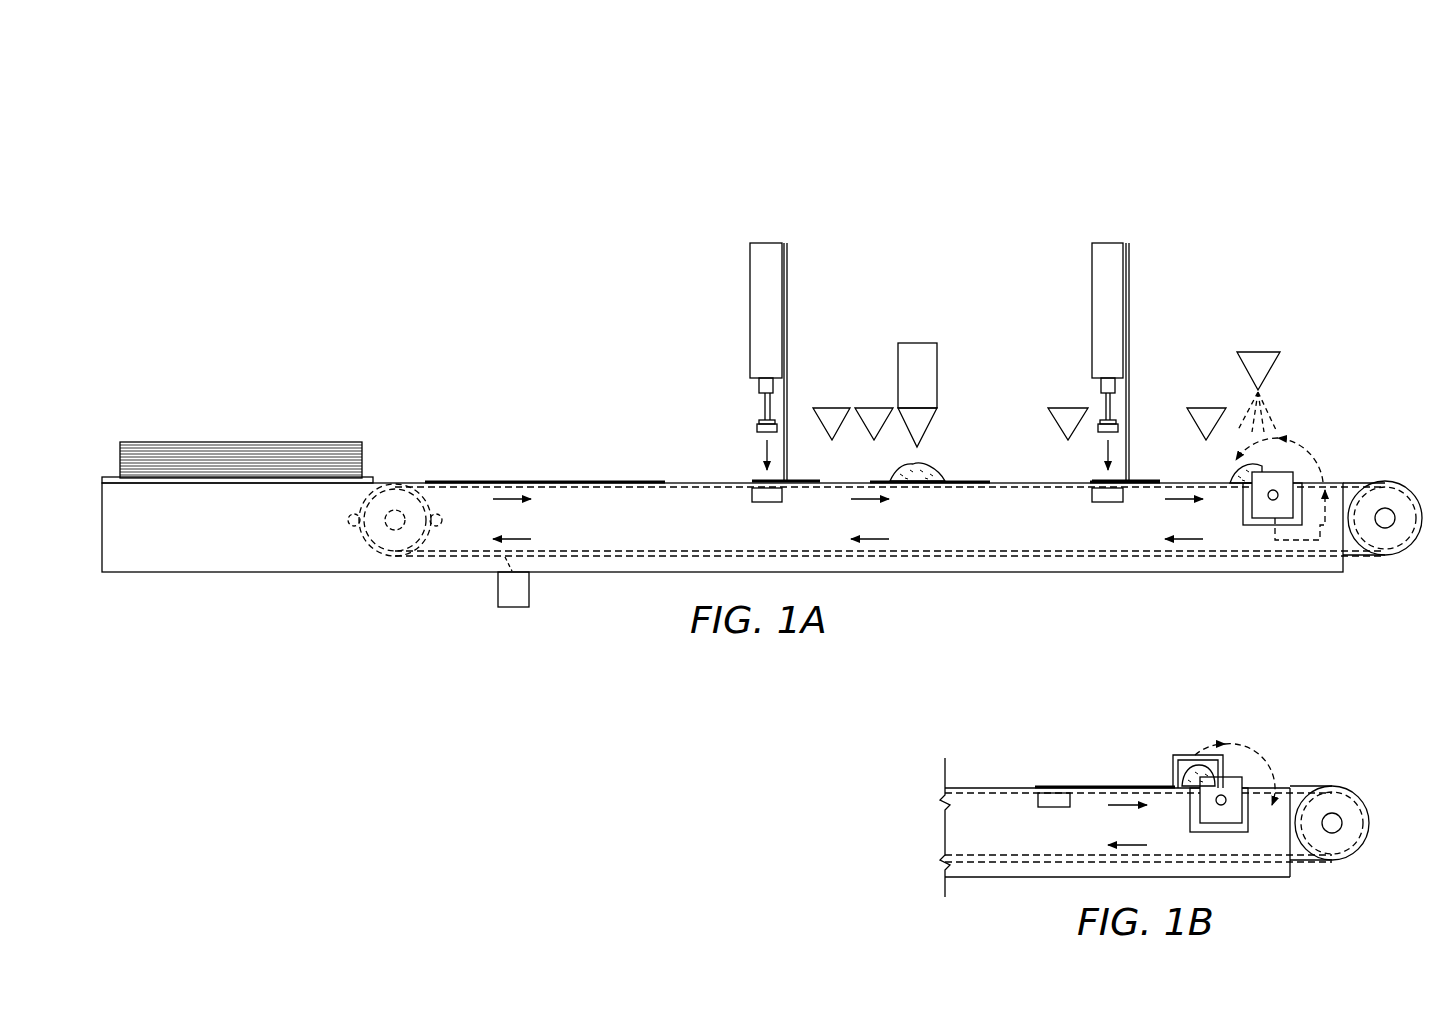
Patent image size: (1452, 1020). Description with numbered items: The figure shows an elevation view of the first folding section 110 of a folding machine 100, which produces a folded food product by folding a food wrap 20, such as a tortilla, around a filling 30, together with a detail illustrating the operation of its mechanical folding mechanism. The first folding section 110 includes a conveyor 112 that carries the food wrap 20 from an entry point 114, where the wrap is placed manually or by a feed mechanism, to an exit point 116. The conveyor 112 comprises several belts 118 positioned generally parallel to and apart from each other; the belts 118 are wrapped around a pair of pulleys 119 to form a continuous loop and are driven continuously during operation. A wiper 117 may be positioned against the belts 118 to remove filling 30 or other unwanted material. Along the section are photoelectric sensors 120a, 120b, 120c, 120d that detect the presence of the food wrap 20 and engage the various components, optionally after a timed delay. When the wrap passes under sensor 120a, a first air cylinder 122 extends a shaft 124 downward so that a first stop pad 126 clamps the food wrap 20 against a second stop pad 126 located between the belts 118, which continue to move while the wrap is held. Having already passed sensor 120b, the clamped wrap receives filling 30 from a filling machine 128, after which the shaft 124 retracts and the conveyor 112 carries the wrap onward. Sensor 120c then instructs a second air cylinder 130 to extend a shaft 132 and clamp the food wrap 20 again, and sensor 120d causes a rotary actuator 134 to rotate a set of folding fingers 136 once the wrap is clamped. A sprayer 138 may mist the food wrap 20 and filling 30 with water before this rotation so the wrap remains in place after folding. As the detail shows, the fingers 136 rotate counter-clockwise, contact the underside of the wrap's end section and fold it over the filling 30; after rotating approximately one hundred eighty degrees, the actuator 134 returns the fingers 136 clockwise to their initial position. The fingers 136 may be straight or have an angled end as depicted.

In FIG. 1A, the folding machine 100 is at (326, 151).
In FIG. 1A, the first folding section 110 is at (616, 220).
In FIG. 1B, the first folding section 110 is at (1127, 825).
In FIG. 1A, the conveyor 112 is at (968, 575).
In FIG. 1B, the conveyor 112 is at (1136, 827).
In FIG. 1A, the entry point 114 is at (404, 443).
In FIG. 1A, the exit point 116 is at (1410, 420).
In FIG. 1A, the wiper 117 is at (498, 590).
In FIG. 1A, the belts 118 is at (660, 550).
In FIG. 1B, the belts 118 is at (1138, 827).
In FIG. 1A, the pulleys 119 is at (365, 553).
In FIG. 1B, the pulleys 119 is at (1332, 823).
In FIG. 1A, the food wrap 20 is at (203, 442).
In FIG. 1A, the filling 30 is at (935, 462).
In FIG. 1A, the sensor 120a is at (835, 408).
In FIG. 1A, the sensor 120b is at (880, 408).
In FIG. 1A, the sensor 120c is at (1070, 408).
In FIG. 1A, the sensor 120d is at (1210, 408).
In FIG. 1A, the first air cylinder 122 is at (765, 243).
In FIG. 1A, the shaft 124 is at (765, 405).
In FIG. 1A, the stop pads 126 is at (757, 428).
In FIG. 1B, the stop pads 126 is at (1054, 800).
In FIG. 1A, the filling machine 128 is at (918, 343).
In FIG. 1A, the second air cylinder 130 is at (1108, 243).
In FIG. 1A, the shaft 132 is at (1112, 405).
In FIG. 1A, the rotary actuator 134 is at (1255, 530).
In FIG. 1B, the rotary actuator 134 is at (1219, 804).
In FIG. 1A, the folding fingers 136 is at (1290, 540).
In FIG. 1B, the folding fingers 136 is at (1190, 757).
In FIG. 1A, the sprayer 138 is at (1258, 352).